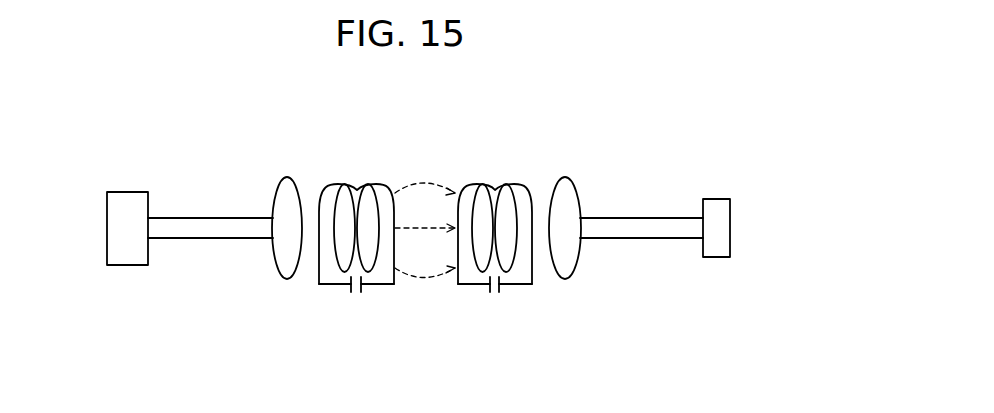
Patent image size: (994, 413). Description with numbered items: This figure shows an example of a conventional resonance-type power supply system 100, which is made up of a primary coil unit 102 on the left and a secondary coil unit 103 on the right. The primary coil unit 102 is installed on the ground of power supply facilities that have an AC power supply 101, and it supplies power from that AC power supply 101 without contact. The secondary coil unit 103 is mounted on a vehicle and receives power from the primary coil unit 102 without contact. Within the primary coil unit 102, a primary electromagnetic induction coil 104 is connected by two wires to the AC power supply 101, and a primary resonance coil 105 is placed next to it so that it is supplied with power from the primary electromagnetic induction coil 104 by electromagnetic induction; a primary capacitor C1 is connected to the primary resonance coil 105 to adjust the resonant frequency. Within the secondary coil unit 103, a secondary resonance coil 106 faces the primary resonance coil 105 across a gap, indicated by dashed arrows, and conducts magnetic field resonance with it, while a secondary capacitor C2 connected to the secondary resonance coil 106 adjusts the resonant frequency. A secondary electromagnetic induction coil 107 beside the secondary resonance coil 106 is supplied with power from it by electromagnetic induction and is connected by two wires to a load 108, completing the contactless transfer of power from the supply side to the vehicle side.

The power supply system 100 is at (620, 123).
The AC power supply 101 is at (133, 192).
The primary coil unit 102 is at (300, 297).
The secondary coil unit 103 is at (550, 297).
The primary electromagnetic induction coil 104 is at (285, 177).
The primary resonance coil 105 is at (356, 184).
The secondary resonance coil 106 is at (494, 184).
The secondary electromagnetic induction coil 107 is at (565, 177).
The load 108 is at (713, 199).
The primary capacitor C1 is at (351, 292).
The secondary capacitor C2 is at (499, 292).